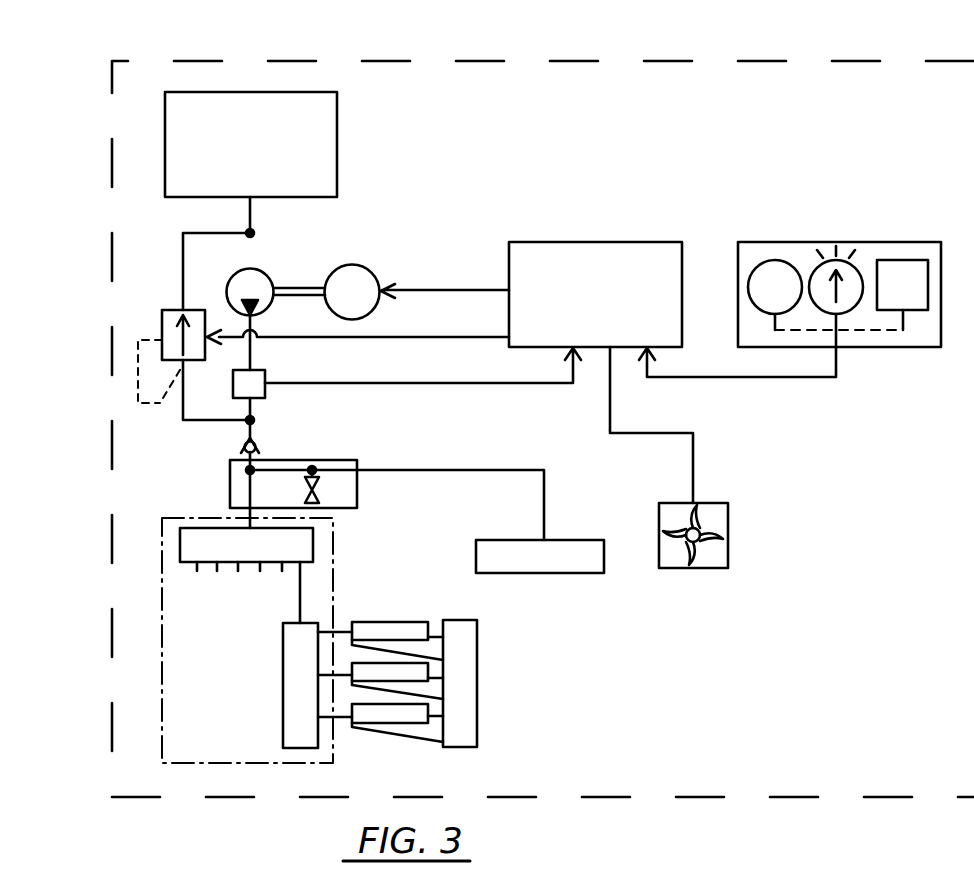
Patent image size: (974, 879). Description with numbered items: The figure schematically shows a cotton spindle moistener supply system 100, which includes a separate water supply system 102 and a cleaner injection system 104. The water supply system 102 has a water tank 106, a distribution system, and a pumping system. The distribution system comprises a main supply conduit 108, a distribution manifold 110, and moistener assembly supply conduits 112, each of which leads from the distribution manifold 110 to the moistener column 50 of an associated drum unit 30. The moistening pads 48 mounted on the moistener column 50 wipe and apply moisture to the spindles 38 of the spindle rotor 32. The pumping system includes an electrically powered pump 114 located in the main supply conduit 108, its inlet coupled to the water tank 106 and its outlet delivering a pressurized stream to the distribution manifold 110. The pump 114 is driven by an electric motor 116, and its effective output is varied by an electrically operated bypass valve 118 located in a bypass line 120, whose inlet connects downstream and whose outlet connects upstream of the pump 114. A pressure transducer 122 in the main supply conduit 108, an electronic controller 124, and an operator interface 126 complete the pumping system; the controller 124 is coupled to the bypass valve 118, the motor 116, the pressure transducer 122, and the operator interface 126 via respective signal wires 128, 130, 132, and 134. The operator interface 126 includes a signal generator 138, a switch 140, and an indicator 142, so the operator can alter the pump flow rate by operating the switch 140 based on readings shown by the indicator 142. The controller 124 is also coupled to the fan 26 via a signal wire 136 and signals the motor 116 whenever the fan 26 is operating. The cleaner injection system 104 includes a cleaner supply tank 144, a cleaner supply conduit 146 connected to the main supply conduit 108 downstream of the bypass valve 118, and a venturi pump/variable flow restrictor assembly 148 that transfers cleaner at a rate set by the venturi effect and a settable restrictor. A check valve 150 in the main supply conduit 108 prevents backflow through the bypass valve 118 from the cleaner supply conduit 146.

The moistener supply system 100 is at (702, 48).
The water supply system 102 is at (345, 208).
The cleaner injection system 104 is at (587, 433).
The water tank 106 is at (330, 92).
The main supply conduit 108 is at (248, 213).
The distribution manifold 110 is at (180, 537).
The moistener assembly supply conduits 112 is at (197, 568).
The pump 114 is at (263, 270).
The electric motor 116 is at (363, 267).
The bypass valve 118 is at (162, 317).
The bypass line 120 is at (183, 236).
The pressure transducer 122 is at (260, 392).
The electronic controller 124 is at (668, 208).
The operator interface 126 is at (816, 218).
The signal wire 128 is at (418, 337).
The signal wire 130 is at (480, 260).
The signal wire 132 is at (433, 383).
The signal wire 134 is at (772, 378).
The signal wire 136 is at (697, 480).
The signal generator 138 is at (770, 260).
The switch 140 is at (912, 260).
The indicator 142 is at (842, 260).
The cleaner supply tank 144 is at (573, 540).
The cleaner supply conduit 146 is at (490, 438).
The venturi pump/variable flow restrictor assembly 148 is at (348, 460).
The check valve 150 is at (241, 450).
The fan 26 is at (730, 520).
The drum unit 30 is at (376, 750).
The front spindle rotor 32 is at (468, 652).
The spindles 38 is at (412, 642).
The moistening pads 48 is at (402, 600).
The moistener column 50 is at (293, 716).